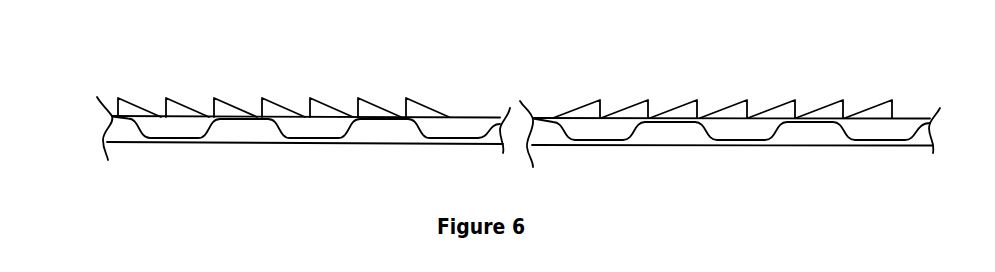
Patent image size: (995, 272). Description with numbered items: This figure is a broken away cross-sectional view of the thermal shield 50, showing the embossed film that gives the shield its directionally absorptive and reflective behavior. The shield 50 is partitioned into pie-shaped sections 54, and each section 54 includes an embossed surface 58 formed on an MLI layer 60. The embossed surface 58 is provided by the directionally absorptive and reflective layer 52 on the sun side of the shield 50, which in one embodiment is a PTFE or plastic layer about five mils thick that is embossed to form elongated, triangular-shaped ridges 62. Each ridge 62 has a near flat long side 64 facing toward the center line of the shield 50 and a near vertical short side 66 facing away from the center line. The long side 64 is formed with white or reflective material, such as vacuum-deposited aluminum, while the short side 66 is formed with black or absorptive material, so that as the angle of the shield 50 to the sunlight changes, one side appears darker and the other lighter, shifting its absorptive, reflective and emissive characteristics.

The shield 50 is at (592, 78).
The directionally absorptive and reflective layer 52 is at (112, 115).
The pie-shaped section 54 is at (297, 75).
The embossed surface 58 is at (101, 118).
The MLI layer 60 is at (128, 121).
The ridge 62 is at (411, 98).
The long side 64 is at (682, 107).
The short side 66 is at (750, 107).